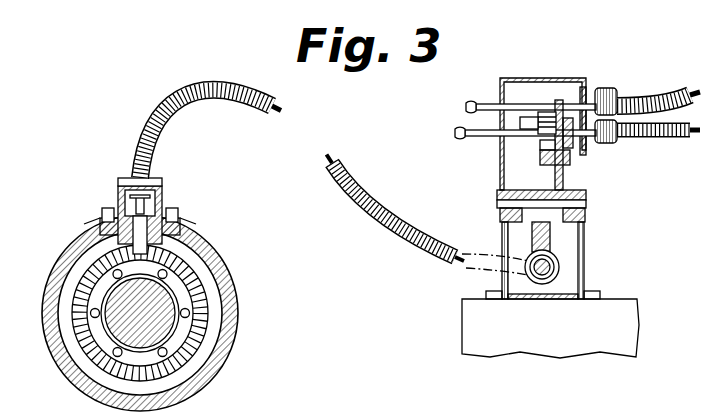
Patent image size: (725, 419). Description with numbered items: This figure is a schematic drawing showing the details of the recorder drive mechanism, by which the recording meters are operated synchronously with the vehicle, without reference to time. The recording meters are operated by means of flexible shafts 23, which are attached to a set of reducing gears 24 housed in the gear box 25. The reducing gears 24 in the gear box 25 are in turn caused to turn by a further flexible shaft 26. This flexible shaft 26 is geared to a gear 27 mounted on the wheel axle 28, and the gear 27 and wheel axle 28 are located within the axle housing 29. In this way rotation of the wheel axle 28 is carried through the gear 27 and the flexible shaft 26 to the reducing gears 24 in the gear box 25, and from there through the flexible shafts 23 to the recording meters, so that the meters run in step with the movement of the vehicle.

The flexible shafts 23 is at (640, 98).
The reducing gears 24 is at (559, 178).
The gear box 25 is at (552, 78).
The flexible shaft 26 is at (337, 186).
The gear 27 is at (205, 297).
The wheel axle 28 is at (130, 318).
The axle housing 29 is at (232, 359).